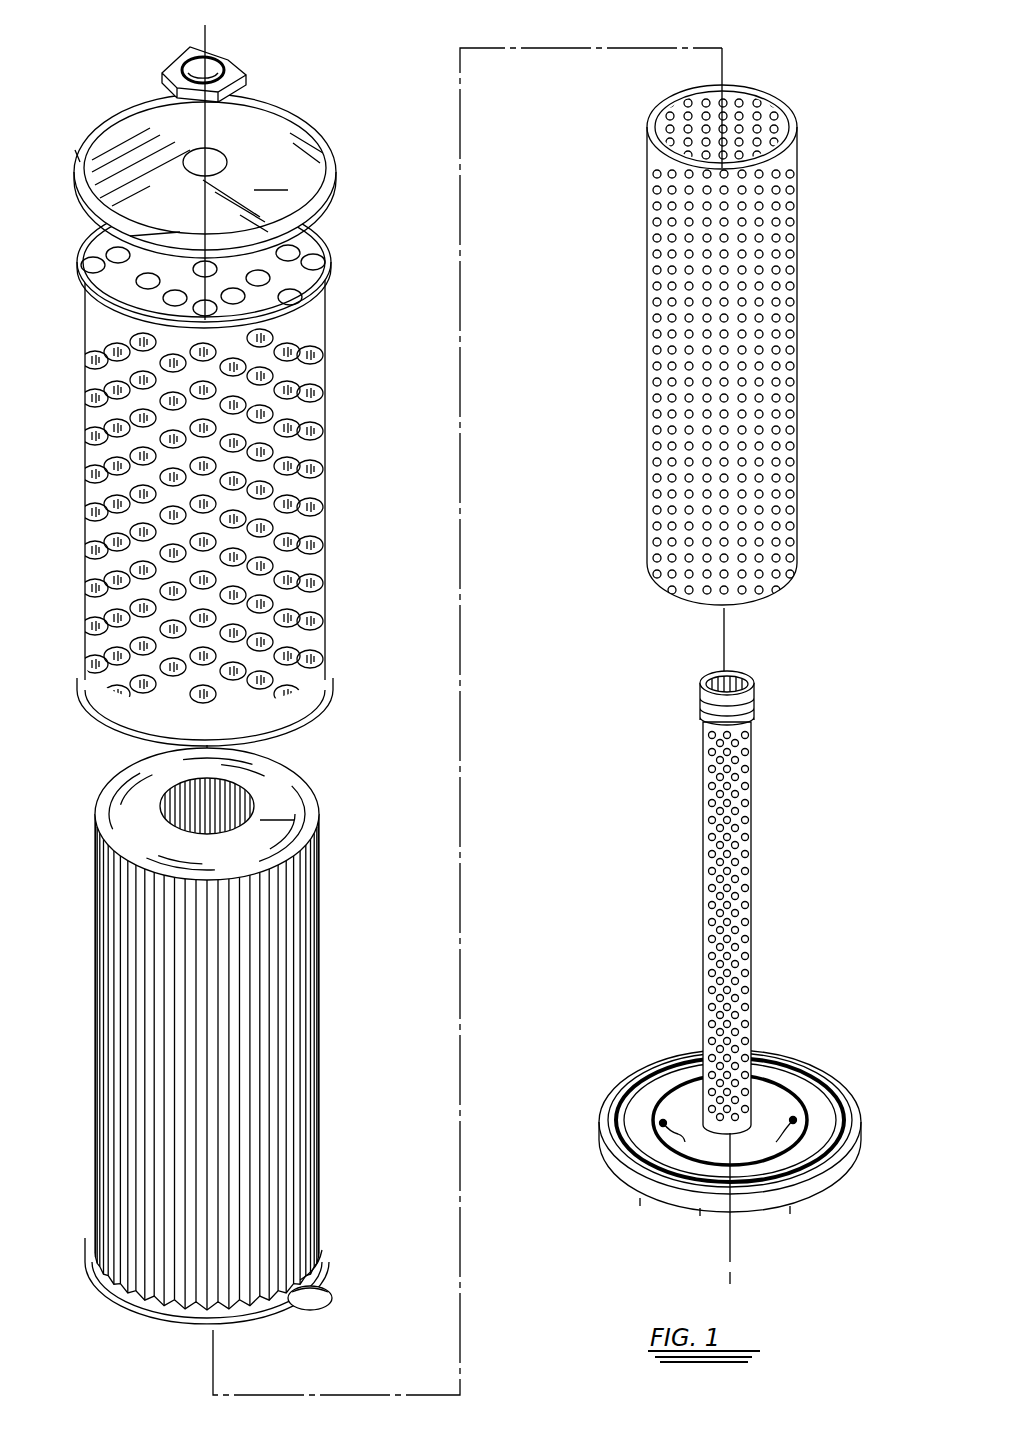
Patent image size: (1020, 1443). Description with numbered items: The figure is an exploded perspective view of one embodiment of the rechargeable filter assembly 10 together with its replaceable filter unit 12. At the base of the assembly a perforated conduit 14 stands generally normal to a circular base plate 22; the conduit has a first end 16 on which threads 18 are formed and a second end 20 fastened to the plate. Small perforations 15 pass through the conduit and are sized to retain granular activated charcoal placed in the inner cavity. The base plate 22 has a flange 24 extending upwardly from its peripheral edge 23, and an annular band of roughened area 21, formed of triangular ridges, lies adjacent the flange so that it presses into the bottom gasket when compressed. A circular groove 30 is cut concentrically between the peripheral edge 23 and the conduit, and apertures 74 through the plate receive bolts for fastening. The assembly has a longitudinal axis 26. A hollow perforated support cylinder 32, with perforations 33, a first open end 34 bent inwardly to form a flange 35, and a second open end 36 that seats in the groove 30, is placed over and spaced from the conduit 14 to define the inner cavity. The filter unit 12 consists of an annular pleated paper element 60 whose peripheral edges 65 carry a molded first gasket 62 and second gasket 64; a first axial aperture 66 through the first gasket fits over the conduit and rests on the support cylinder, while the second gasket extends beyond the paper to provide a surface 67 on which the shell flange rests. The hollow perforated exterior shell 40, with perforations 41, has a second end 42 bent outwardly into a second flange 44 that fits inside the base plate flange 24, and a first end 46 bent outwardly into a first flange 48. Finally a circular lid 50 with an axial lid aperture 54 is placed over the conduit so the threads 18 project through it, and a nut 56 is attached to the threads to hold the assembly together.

The rechargeable filter assembly 10 is at (233, 384).
The filter unit 12 is at (235, 1032).
The perforated conduit 14 is at (758, 890).
The perforations 15 is at (736, 922).
The first end 16 is at (750, 680).
The threads 18 is at (754, 706).
The second end 20 is at (729, 1113).
The roughened area 21 is at (618, 1086).
The base plate 22 is at (852, 1122).
The peripheral edge 23 is at (770, 1052).
The flange 24 is at (858, 1148).
The longitudinal axis 26 is at (732, 1236).
The circular groove 30 is at (753, 1122).
The perforated support cylinder 32 is at (753, 345).
The perforations 33 is at (792, 458).
The first open end 34 is at (798, 158).
The flange 35 is at (792, 118).
The second open end 36 is at (797, 562).
The exterior shell 40 is at (237, 478).
The perforations 41 is at (312, 488).
The second end 42 is at (330, 642).
The second flange 44 is at (330, 688).
The first end 46 is at (330, 286).
The first flange 48 is at (330, 240).
The lid 50 is at (205, 161).
The lid aperture 54 is at (225, 152).
The nut 56 is at (230, 58).
The pleated paper element 60 is at (322, 978).
The first gasket 62 is at (227, 806).
The second gasket 64 is at (328, 1272).
The peripheral edges 65 is at (332, 1302).
The first axial aperture 66 is at (248, 788).
The surface 67 is at (326, 1252).
The aperture 74 is at (728, 1135).